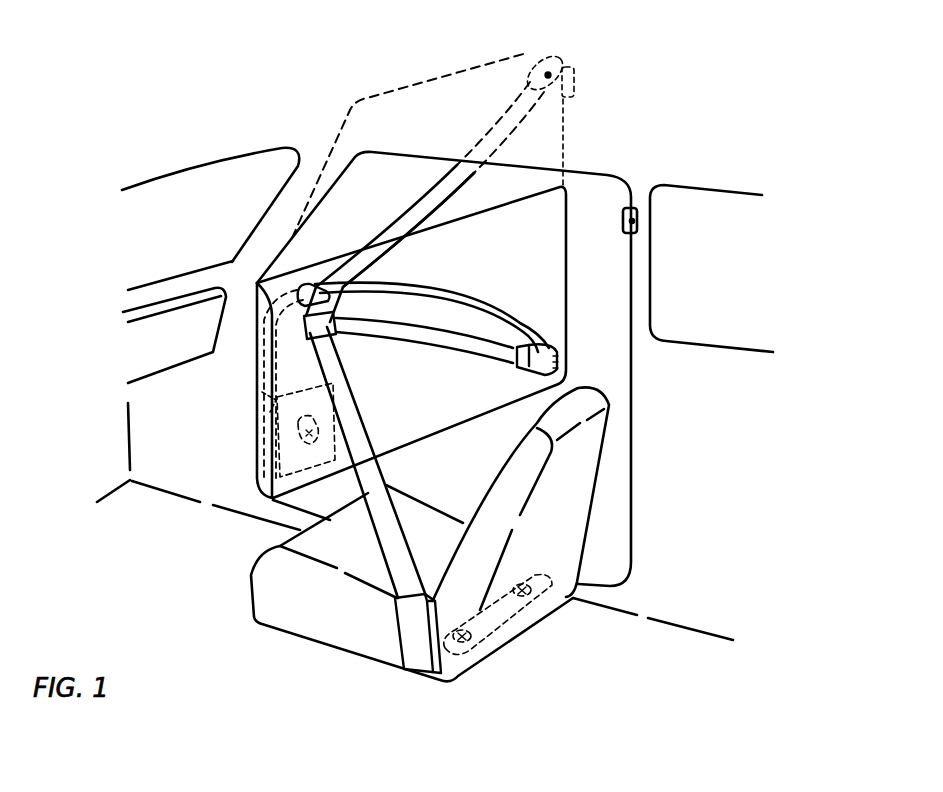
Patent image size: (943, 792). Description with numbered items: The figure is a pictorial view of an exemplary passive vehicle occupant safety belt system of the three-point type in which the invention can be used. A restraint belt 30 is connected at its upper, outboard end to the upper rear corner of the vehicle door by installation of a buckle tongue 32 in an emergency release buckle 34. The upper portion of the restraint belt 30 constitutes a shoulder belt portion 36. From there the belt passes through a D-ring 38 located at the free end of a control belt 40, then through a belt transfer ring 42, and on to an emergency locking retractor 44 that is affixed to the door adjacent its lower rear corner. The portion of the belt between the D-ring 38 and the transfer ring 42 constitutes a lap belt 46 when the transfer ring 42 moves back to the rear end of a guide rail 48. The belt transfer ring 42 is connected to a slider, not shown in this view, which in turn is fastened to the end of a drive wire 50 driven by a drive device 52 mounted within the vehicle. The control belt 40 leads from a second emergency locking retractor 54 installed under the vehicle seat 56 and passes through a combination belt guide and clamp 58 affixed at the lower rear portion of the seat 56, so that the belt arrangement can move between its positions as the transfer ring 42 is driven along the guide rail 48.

The restraint belt 30 is at (418, 201).
The buckle tongue 32 is at (532, 55).
The emergency release buckle 34 is at (565, 53).
The shoulder belt portion 36 is at (470, 177).
The D-ring 38 is at (330, 326).
The control belt 40 is at (357, 409).
The belt transfer ring 42 is at (303, 284).
The emergency locking retractor 44 is at (557, 351).
The lap belt 46 is at (466, 358).
The guide rail 48 is at (494, 300).
The drive wire 50 is at (262, 394).
The drive device 52 is at (279, 461).
The emergency locking retractor 54 is at (543, 627).
The vehicle seat 56 is at (281, 626).
The combination belt guide and clamp 58 is at (425, 674).